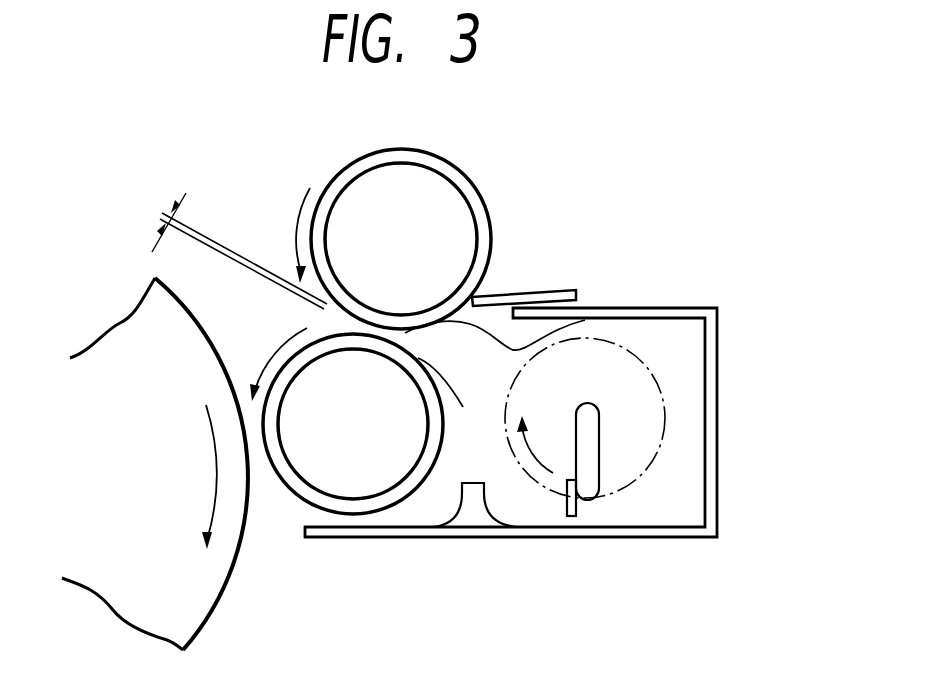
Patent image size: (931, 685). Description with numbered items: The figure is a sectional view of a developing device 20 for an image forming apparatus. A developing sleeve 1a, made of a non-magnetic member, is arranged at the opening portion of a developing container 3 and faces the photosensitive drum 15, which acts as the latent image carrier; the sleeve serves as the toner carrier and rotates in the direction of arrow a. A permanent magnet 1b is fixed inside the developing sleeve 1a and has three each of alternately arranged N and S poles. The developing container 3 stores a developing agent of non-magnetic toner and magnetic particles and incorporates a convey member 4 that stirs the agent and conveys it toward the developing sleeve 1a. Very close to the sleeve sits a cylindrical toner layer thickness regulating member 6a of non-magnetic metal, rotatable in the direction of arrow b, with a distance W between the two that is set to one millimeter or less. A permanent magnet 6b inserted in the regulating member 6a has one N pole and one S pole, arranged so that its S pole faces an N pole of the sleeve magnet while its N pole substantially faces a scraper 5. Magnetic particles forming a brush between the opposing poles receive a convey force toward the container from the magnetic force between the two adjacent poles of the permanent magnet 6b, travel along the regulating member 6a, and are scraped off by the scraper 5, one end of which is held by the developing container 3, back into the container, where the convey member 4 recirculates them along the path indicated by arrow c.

The developing sleeve 1a is at (280, 483).
The permanent magnet 1b is at (300, 490).
The developing container 3 is at (716, 382).
The convey member 4 is at (585, 490).
The scraper 5 is at (550, 290).
The toner layer thickness regulating member 6a is at (456, 164).
The permanent magnet 6b is at (362, 173).
The photosensitive drum 15 is at (207, 627).
The developing device 20 is at (544, 401).
The distance W is at (230, 251).
The arrow a is at (278, 362).
The arrow b is at (294, 235).
The arrow c is at (536, 386).